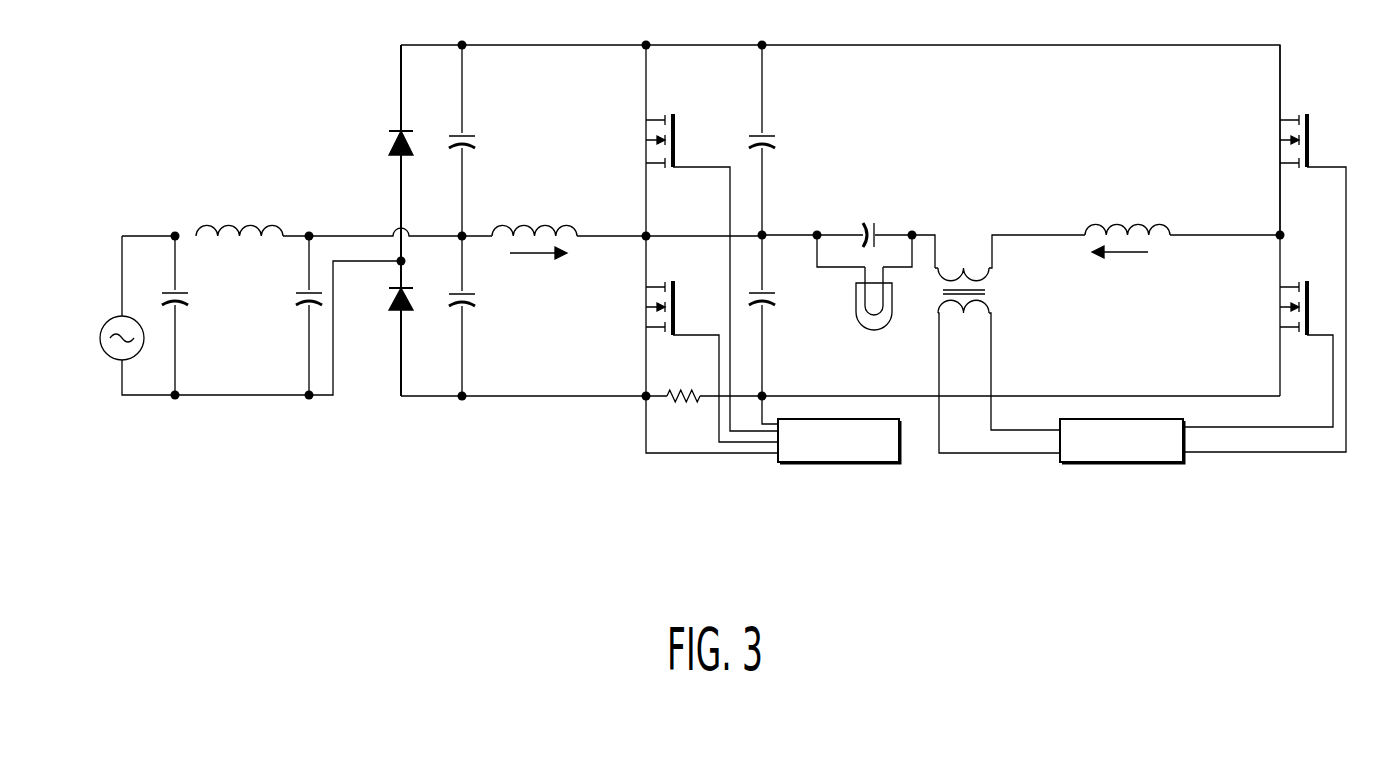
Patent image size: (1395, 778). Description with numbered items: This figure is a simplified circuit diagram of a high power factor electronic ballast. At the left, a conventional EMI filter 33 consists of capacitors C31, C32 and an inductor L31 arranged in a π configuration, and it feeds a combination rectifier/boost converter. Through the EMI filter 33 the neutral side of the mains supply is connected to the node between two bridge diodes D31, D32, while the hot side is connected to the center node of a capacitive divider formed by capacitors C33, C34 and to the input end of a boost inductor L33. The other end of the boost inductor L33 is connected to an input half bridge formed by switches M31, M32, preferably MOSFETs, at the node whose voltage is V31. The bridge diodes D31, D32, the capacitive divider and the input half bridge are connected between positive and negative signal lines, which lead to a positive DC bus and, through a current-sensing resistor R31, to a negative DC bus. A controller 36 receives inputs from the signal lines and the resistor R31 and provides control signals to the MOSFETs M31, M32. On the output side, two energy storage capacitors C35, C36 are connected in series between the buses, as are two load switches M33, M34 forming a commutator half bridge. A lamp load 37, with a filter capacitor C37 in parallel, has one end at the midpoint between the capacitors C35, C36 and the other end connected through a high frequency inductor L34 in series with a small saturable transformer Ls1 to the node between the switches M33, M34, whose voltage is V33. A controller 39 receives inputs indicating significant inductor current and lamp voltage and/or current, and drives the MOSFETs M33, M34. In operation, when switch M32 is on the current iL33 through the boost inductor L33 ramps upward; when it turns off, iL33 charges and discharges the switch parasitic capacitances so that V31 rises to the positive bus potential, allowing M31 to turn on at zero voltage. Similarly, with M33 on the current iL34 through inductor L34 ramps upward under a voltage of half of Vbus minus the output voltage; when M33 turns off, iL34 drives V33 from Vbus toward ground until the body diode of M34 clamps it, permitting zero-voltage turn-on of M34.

The EMI filter 33 is at (238, 465).
The controller 36 is at (837, 463).
The lamp load 37 is at (868, 330).
The controller 39 is at (1123, 463).
The capacitor C31 is at (190, 315).
The capacitor C32 is at (294, 315).
The capacitor C33 is at (482, 140).
The capacitor C34 is at (482, 316).
The energy storage capacitor C35 is at (779, 140).
The energy storage capacitor C36 is at (780, 315).
The filter capacitor C37 is at (864, 222).
The inductor L31 is at (239, 243).
The boost inductor L33 is at (534, 216).
The high frequency inductor L34 is at (1127, 216).
The bridge diode D31 is at (381, 140).
The bridge diode D32 is at (386, 316).
The switch M31 is at (689, 238).
The switch M32 is at (689, 339).
The load switch M33 is at (1264, 248).
The load switch M34 is at (1258, 331).
The current-sensing resistor R31 is at (712, 421).
The saturable transformer Ls1 is at (984, 290).
The node voltage V31 is at (681, 249).
The node voltage V33 is at (1309, 249).
The positive bus potential Vbus is at (804, 65).
The boost inductor current iL33 is at (538, 268).
The output inductor current iL34 is at (1120, 268).